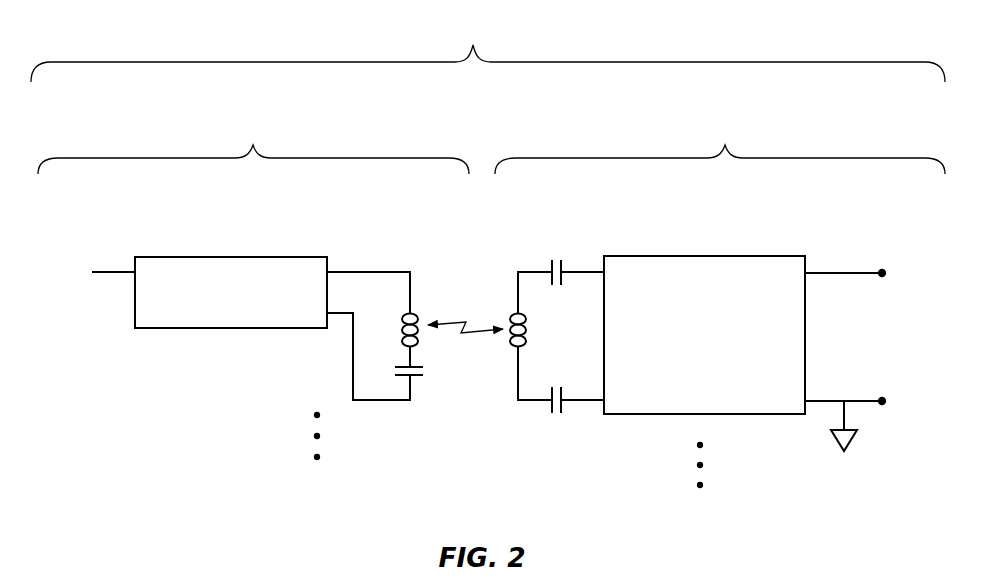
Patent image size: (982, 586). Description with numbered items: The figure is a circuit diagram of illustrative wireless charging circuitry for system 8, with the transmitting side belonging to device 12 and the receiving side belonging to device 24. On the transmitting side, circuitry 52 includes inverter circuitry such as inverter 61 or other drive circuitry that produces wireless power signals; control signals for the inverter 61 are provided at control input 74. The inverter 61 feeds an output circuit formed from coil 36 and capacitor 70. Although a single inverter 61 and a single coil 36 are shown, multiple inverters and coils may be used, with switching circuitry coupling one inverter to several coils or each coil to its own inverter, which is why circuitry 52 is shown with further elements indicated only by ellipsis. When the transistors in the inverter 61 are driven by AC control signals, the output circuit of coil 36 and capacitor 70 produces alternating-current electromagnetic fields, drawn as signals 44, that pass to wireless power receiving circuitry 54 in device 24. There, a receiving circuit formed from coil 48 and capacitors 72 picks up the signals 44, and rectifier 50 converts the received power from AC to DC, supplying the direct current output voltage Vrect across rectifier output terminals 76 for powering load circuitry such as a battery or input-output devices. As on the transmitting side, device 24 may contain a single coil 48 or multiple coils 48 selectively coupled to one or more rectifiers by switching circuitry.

The system 8 is at (488, 52).
The device 12 is at (253, 148).
The device 24 is at (720, 148).
The control input 74 is at (110, 270).
The inverter 61 is at (238, 256).
The coil 36 is at (423, 312).
The capacitor 70 is at (430, 377).
The circuitry 52 is at (272, 378).
The signals 44 is at (468, 322).
The coil 48 is at (500, 346).
The capacitor 72 is at (555, 247).
The rectifier 50 is at (707, 256).
The rectifier output terminals 76 is at (882, 278).
The wireless power receiving circuitry 54 is at (640, 462).